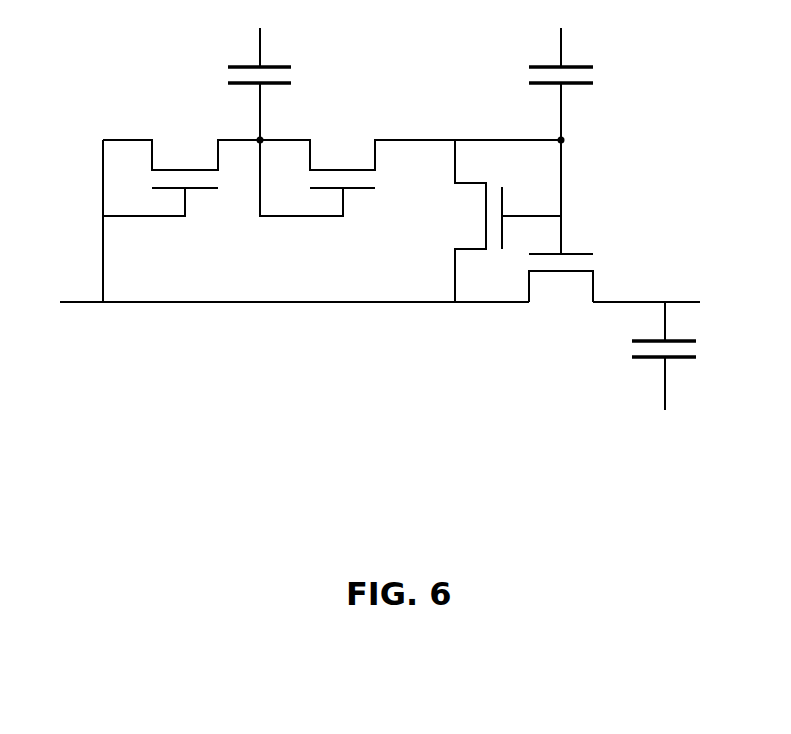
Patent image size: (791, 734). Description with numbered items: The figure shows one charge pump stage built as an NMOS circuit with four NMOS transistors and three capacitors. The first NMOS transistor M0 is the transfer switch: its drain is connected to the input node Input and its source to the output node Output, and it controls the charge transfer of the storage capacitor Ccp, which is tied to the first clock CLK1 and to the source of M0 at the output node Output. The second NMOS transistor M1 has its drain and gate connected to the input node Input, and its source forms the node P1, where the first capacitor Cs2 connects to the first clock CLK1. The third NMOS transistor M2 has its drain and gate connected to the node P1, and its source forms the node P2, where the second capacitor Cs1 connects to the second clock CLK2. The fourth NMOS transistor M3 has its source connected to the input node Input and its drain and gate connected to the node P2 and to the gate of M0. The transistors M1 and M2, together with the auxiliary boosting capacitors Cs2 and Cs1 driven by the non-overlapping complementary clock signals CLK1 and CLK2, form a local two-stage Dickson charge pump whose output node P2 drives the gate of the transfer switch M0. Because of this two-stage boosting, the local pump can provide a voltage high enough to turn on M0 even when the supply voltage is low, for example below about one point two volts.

The second NMOS transistor M1 is at (181, 174).
The third NMOS transistor M2 is at (410, 174).
The fourth NMOS transistor M3 is at (517, 221).
The first NMOS transistor M0 is at (561, 288).
The second capacitor Cs1 is at (590, 84).
The first capacitor Cs2 is at (290, 84).
The third capacitor Ccp is at (636, 356).
The node P1 is at (246, 125).
The output node of the local pump stage P2 is at (580, 140).
The first clock CLK1 is at (438, 224).
The second clock CLK2 is at (530, 24).
The input node Input is at (67, 284).
The output node Output is at (706, 285).